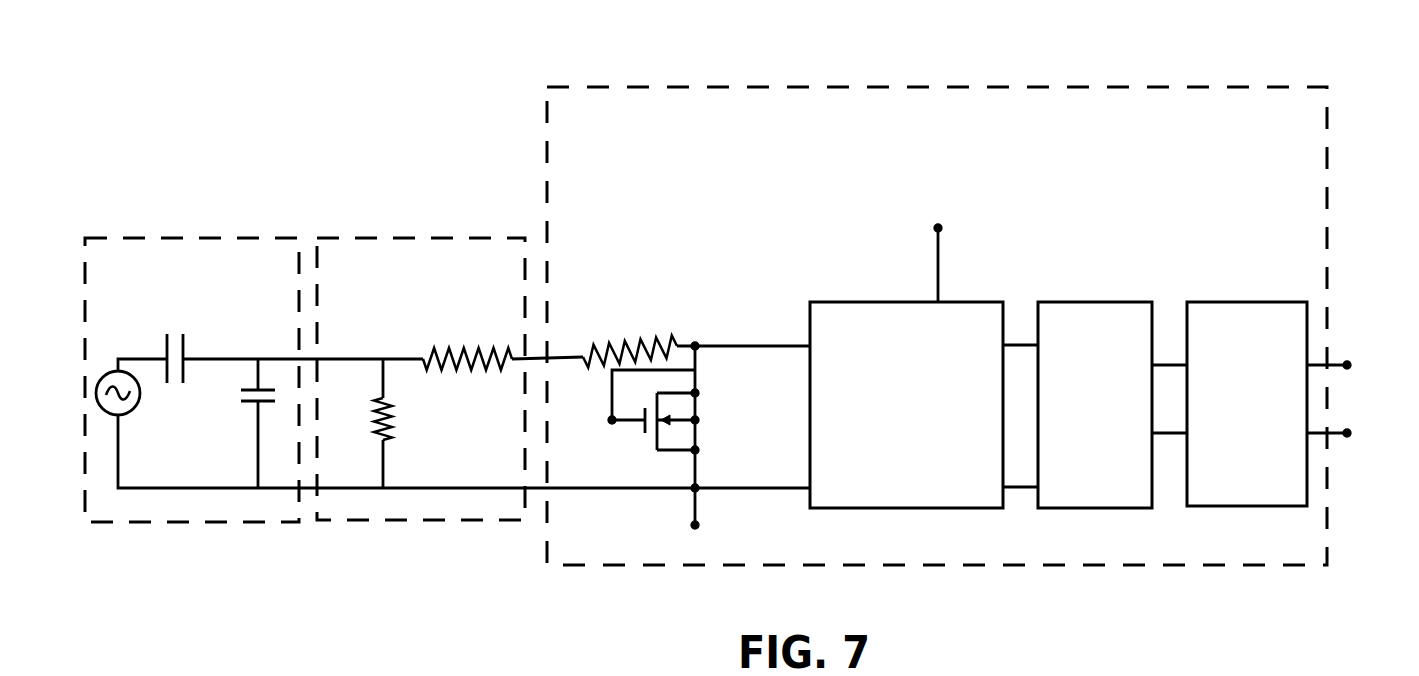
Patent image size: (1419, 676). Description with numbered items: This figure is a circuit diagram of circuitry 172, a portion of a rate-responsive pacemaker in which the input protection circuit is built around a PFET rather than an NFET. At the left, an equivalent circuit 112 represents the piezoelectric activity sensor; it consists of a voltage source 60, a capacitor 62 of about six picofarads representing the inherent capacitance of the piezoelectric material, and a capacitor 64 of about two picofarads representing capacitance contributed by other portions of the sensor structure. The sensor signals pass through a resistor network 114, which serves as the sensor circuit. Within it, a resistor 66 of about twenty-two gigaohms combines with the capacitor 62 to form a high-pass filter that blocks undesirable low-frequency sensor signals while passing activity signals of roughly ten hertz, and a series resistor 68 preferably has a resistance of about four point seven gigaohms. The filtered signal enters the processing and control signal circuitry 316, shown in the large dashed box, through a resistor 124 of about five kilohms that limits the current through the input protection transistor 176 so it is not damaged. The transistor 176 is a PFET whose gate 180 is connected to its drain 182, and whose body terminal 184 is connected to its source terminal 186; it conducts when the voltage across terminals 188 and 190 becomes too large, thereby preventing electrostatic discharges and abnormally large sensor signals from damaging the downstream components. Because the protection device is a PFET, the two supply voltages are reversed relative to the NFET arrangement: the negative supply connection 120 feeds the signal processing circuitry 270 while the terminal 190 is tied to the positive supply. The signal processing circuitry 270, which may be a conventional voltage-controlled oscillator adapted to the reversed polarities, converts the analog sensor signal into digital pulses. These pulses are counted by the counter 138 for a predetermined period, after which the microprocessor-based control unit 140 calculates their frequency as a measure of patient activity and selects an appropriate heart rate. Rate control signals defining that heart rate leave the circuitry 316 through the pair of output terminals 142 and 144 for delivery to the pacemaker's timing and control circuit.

The circuitry 172 is at (233, 83).
The equivalent circuit 112 is at (138, 238).
The resistor network 114 is at (363, 238).
The processing and control signal circuitry 316 is at (853, 87).
The voltage source 60 is at (107, 370).
The capacitor 62 is at (170, 335).
The capacitor 64 is at (246, 399).
The resistor 66 is at (378, 418).
The resistor 68 is at (487, 363).
The resistor 124 is at (620, 335).
The terminal 188 is at (697, 344).
The input protection transistor 176 is at (648, 437).
The gate 180 is at (610, 421).
The drain 182 is at (700, 393).
The body terminal 184 is at (700, 420).
The source terminal 186 is at (700, 450).
The terminal 190 is at (700, 491).
The signal processing circuitry 270 is at (828, 302).
The supply voltage VSS terminal 120 is at (941, 231).
The counter 138 is at (1110, 302).
The control unit 140 is at (1222, 302).
The output terminal 142 is at (1350, 363).
The output terminal 144 is at (1350, 432).